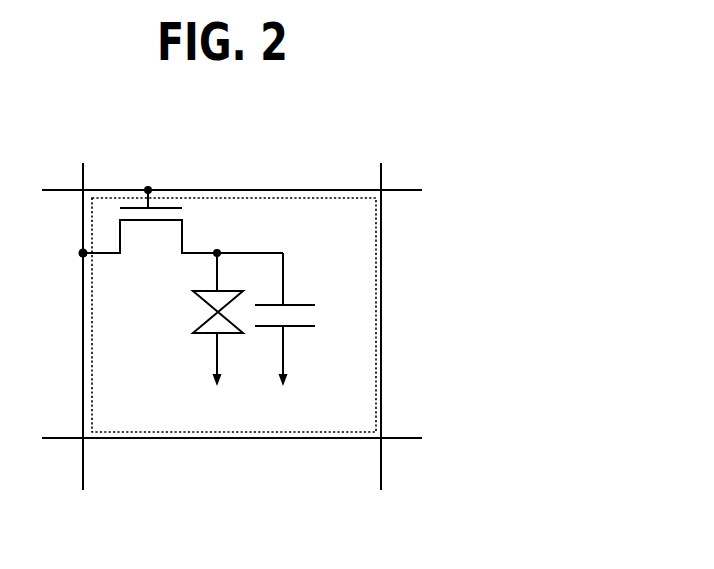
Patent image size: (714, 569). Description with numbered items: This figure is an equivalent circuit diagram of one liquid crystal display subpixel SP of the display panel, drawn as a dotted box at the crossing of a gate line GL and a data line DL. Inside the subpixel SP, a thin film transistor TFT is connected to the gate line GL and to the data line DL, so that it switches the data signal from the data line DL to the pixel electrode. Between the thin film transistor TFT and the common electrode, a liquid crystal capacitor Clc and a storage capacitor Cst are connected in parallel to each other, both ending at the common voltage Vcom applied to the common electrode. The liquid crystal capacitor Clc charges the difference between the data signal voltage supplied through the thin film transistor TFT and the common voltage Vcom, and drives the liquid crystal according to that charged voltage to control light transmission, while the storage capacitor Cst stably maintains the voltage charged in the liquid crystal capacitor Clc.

The subpixel SP is at (250, 197).
The data line DL is at (231, 316).
The gate line GL is at (217, 313).
The thin film transistor TFT is at (181, 226).
The storage capacitor Cst is at (198, 319).
The liquid crystal capacitor Clc is at (301, 319).
The common voltage Vcom is at (244, 409).